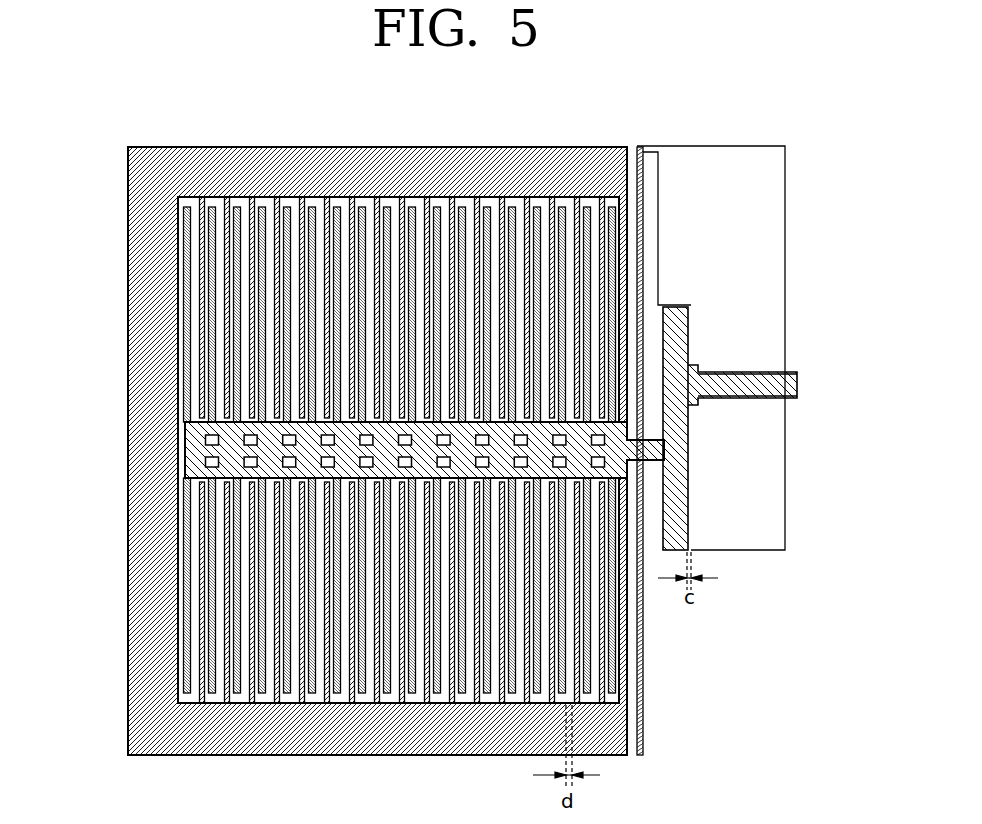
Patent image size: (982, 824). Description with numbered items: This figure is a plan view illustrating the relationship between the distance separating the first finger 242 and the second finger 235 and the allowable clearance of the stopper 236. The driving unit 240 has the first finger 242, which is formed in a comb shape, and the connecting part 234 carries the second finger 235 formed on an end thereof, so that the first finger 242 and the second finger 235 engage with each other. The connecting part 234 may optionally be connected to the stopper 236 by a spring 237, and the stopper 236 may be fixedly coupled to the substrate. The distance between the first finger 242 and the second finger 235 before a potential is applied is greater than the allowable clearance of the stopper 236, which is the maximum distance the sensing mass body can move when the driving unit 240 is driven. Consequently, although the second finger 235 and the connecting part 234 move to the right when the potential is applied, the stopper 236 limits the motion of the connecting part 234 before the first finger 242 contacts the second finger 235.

The driving unit 240 is at (254, 157).
The first finger 242 is at (222, 633).
The connecting part 234 is at (797, 385).
The second finger 235 is at (613, 648).
The stopper 236 is at (738, 165).
The spring 237 is at (643, 232).